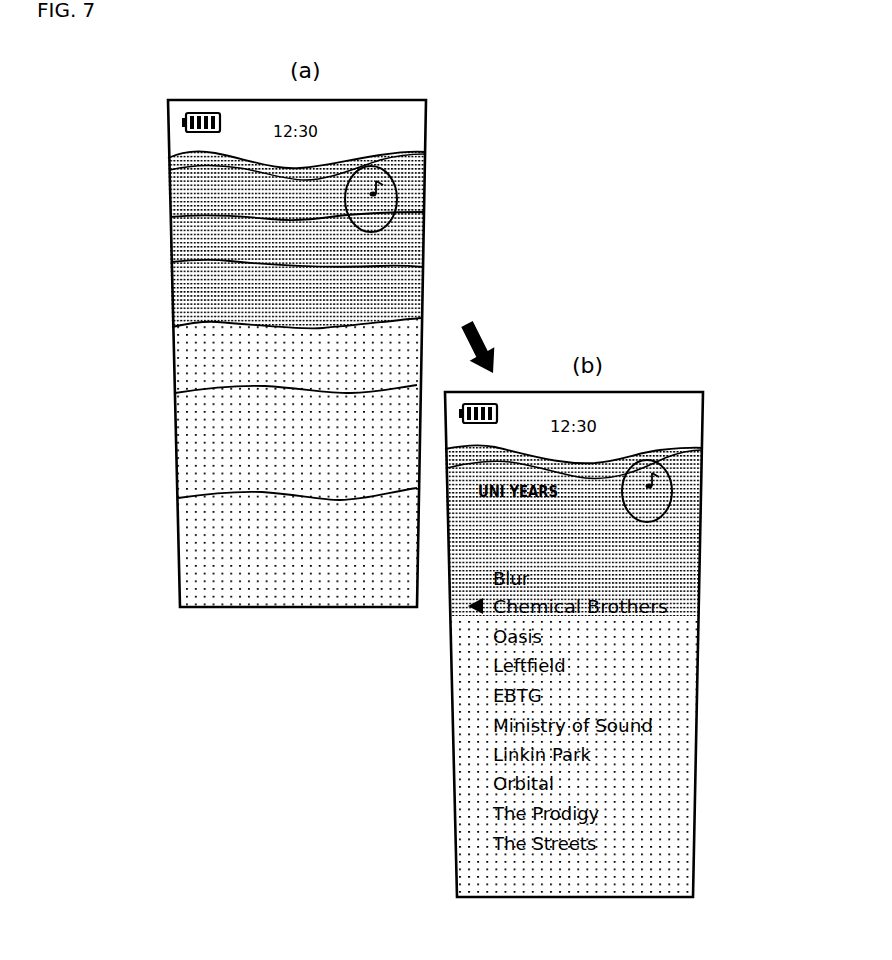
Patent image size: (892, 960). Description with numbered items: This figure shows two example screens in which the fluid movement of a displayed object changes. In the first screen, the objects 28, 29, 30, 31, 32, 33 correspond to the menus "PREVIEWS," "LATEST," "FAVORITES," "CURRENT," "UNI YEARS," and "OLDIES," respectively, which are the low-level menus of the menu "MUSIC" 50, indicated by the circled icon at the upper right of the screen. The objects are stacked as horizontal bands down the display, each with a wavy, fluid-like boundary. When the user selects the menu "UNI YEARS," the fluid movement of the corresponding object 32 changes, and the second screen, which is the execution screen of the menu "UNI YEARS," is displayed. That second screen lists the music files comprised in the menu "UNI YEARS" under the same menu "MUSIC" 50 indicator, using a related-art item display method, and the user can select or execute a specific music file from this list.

The object 28 is at (172, 193).
The object 29 is at (173, 246).
The object 30 is at (174, 305).
The object 31 is at (195, 368).
The object 32 is at (196, 439).
The object 33 is at (190, 521).
The menu "MUSIC" 50 is at (398, 192).